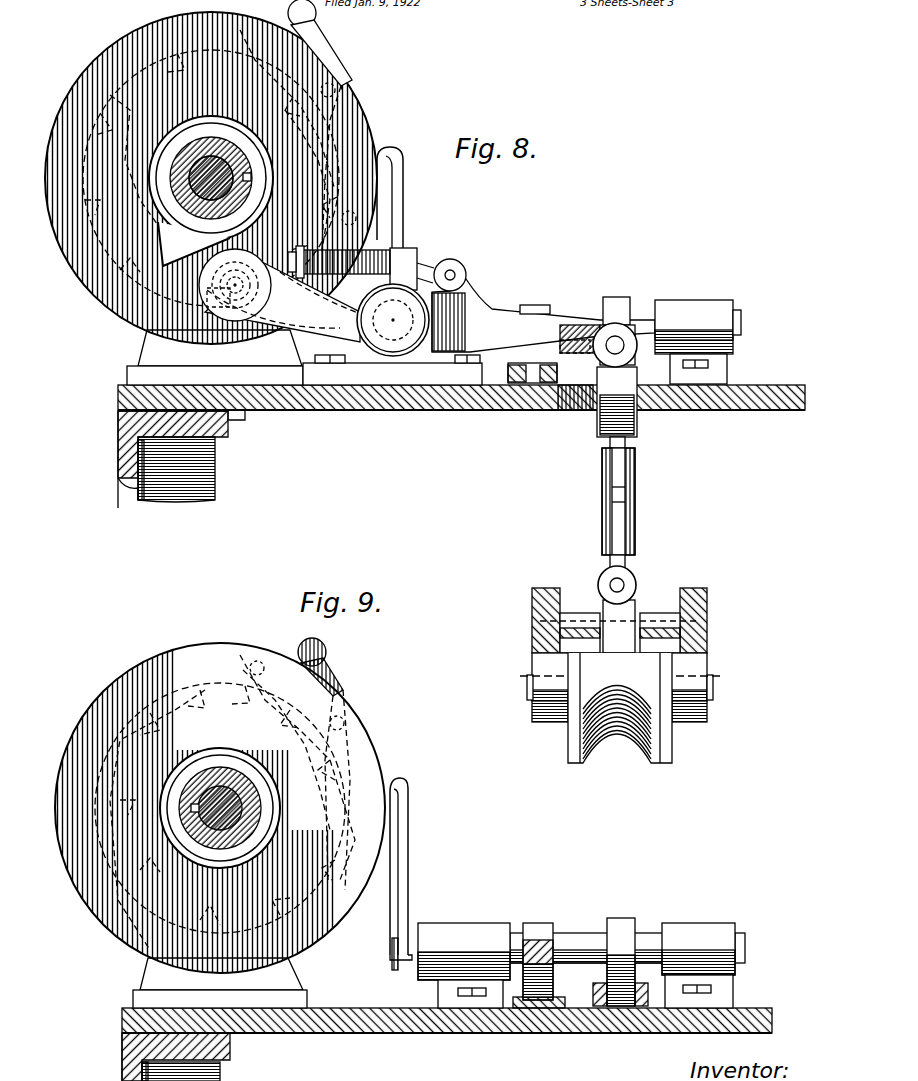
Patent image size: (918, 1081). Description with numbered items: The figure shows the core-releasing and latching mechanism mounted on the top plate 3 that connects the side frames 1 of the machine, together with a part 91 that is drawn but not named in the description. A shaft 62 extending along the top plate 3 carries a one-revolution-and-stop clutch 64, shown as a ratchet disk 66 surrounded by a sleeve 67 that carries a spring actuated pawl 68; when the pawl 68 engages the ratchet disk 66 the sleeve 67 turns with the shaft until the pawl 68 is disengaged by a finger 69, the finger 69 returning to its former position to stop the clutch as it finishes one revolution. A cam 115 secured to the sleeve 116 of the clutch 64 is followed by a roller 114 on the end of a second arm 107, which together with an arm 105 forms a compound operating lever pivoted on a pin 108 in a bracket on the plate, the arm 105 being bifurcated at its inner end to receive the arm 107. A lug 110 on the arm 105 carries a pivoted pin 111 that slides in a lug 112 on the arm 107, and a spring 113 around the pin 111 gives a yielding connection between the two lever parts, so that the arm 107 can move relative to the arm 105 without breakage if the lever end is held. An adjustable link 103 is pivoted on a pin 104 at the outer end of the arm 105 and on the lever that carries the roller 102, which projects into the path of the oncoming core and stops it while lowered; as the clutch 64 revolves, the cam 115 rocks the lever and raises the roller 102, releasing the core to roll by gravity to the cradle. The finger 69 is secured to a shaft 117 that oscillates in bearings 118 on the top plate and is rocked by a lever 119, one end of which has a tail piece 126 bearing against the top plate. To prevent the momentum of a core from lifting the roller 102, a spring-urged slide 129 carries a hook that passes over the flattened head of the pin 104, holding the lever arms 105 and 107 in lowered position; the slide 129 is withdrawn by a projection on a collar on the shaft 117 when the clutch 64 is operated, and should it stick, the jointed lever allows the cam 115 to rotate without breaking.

In FIG. 8, the side frames 1 is at (218, 448).
In FIG. 9, the side frames 1 is at (222, 1060).
In FIG. 8, the top plate 3 is at (386, 410).
In FIG. 9, the top plate 3 is at (398, 1033).
In FIG. 8, the shaft 62 is at (238, 195).
In FIG. 9, the shaft 62 is at (235, 852).
In FIG. 8, the one-revolution-and-stop clutch 64 is at (300, 110).
In FIG. 9, the one-revolution-and-stop clutch 64 is at (372, 766).
In FIG. 8, the ratchet disk 66 is at (98, 268).
In FIG. 9, the ratchet disk 66 is at (205, 690).
In FIG. 8, the sleeve 67 is at (48, 170).
In FIG. 9, the sleeve 67 is at (156, 662).
In FIG. 8, the spring actuated pawl 68 is at (316, 13).
In FIG. 9, the spring actuated pawl 68 is at (327, 650).
In FIG. 8, the finger 69 is at (404, 186).
In FIG. 9, the finger 69 is at (412, 822).
In FIG. 8, the slide bar 91 is at (520, 395).
In FIG. 9, the slide bar 91 is at (542, 1008).
In FIG. 8, the roller 102 is at (676, 750).
In FIG. 8, the adjustable link 103 is at (637, 520).
In FIG. 8, the pin 104 is at (622, 335).
In FIG. 8, the arm 105 is at (500, 302).
In FIG. 8, the second arm 107 is at (330, 318).
In FIG. 8, the pin 108 is at (388, 352).
In FIG. 8, the lug 110 is at (470, 276).
In FIG. 8, the pin 111 is at (444, 262).
In FIG. 8, the lug 112 is at (425, 252).
In FIG. 8, the spring 113 is at (372, 250).
In FIG. 8, the roller 114 is at (214, 300).
In FIG. 8, the cam 115 is at (272, 170).
In FIG. 8, the sleeve 116 is at (246, 163).
In FIG. 9, the shaft 117 is at (745, 948).
In FIG. 9, the bearings 118 is at (475, 925).
In FIG. 9, the lever 119 is at (540, 935).
In FIG. 9, the tail piece 126 is at (553, 984).
In FIG. 9, the slide 129 is at (600, 1008).